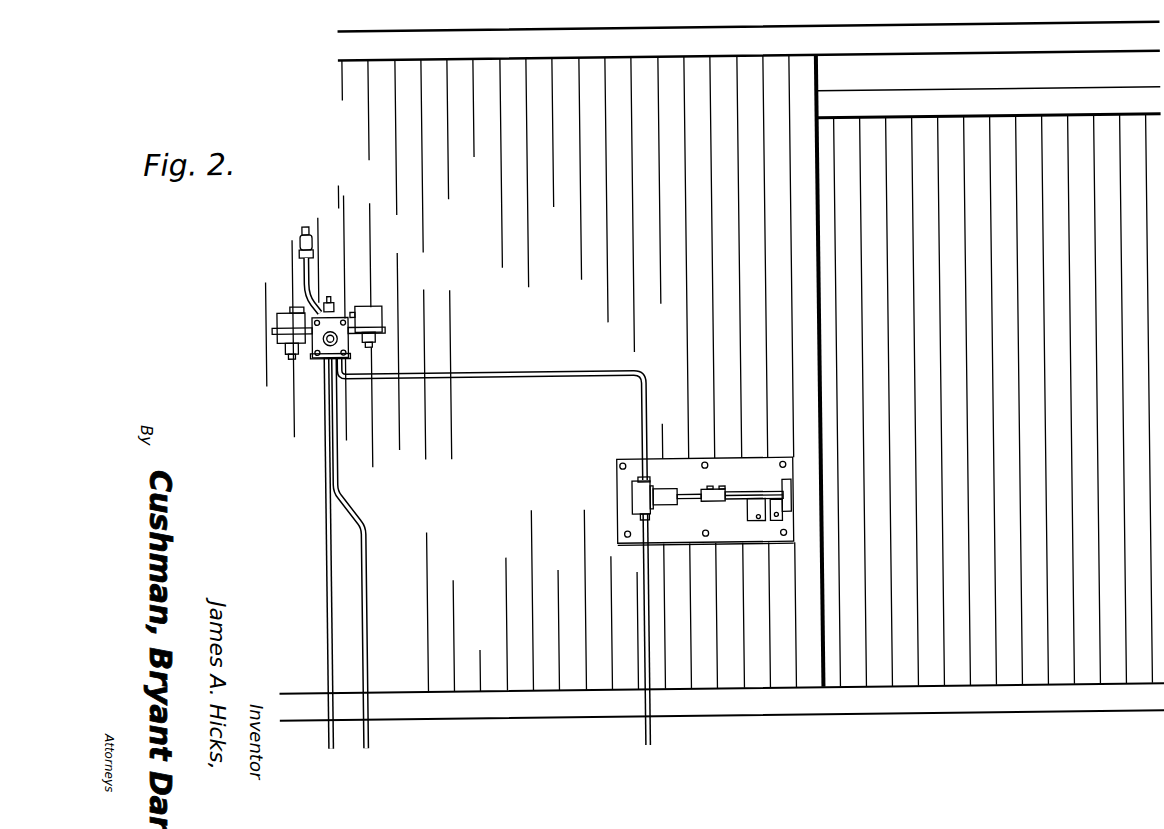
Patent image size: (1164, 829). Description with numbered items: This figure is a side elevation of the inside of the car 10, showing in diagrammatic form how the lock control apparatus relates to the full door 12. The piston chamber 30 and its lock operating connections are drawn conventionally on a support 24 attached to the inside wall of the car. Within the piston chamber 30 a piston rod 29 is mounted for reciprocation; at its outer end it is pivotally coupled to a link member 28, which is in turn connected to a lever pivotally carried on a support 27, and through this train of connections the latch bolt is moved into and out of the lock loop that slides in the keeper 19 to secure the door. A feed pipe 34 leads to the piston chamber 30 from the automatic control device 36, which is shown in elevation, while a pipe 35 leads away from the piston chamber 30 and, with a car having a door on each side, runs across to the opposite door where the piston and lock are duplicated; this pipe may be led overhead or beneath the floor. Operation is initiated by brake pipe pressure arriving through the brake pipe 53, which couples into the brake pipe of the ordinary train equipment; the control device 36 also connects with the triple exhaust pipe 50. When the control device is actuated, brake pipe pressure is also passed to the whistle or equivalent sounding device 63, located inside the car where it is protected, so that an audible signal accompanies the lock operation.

The car 10 is at (553, 309).
The full door 12 is at (1042, 362).
The keeper 19 is at (788, 496).
The support 24 is at (771, 524).
The support 27 is at (752, 509).
The link member 28 is at (732, 491).
The piston rod 29 is at (691, 504).
The piston chamber 30 is at (633, 492).
The feed pipe 34 is at (641, 420).
The pipe 35 is at (648, 637).
The automatic control device 36 is at (309, 348).
The triple exhaust pipe 50 is at (324, 460).
The brake pipe 53 is at (338, 481).
The whistle 63 is at (302, 234).